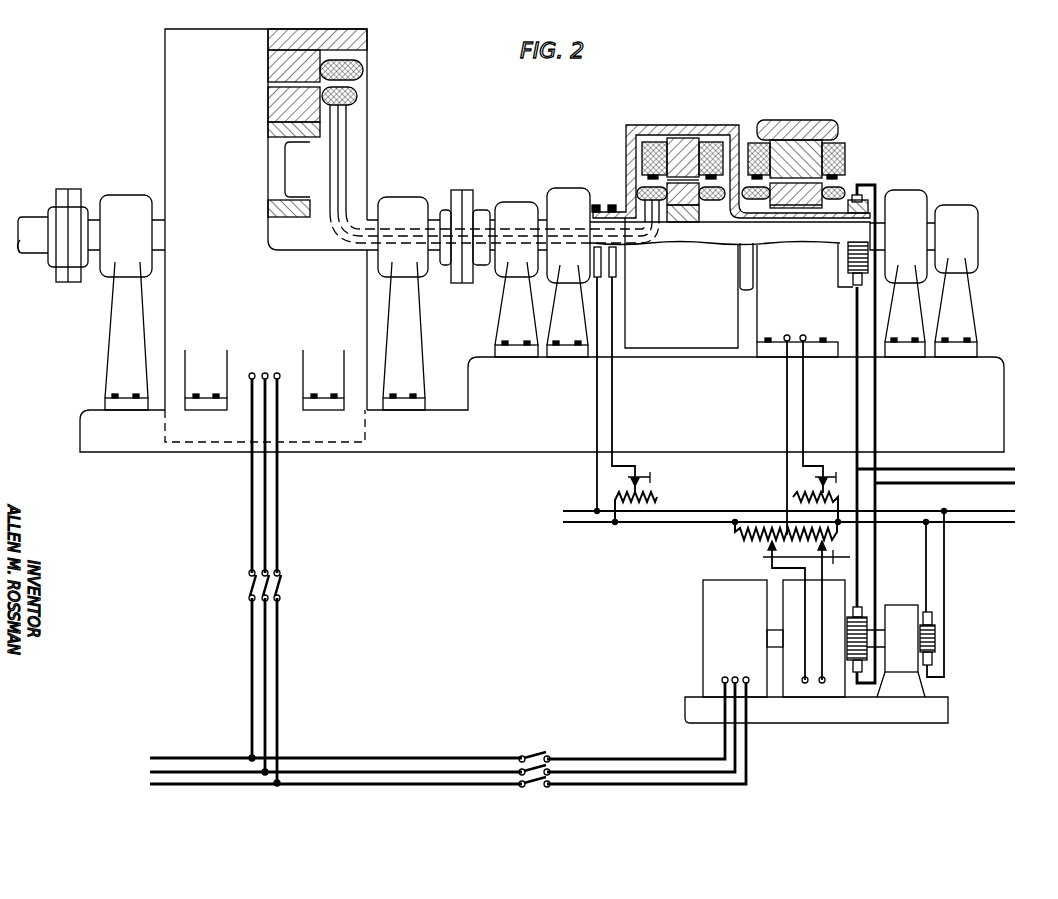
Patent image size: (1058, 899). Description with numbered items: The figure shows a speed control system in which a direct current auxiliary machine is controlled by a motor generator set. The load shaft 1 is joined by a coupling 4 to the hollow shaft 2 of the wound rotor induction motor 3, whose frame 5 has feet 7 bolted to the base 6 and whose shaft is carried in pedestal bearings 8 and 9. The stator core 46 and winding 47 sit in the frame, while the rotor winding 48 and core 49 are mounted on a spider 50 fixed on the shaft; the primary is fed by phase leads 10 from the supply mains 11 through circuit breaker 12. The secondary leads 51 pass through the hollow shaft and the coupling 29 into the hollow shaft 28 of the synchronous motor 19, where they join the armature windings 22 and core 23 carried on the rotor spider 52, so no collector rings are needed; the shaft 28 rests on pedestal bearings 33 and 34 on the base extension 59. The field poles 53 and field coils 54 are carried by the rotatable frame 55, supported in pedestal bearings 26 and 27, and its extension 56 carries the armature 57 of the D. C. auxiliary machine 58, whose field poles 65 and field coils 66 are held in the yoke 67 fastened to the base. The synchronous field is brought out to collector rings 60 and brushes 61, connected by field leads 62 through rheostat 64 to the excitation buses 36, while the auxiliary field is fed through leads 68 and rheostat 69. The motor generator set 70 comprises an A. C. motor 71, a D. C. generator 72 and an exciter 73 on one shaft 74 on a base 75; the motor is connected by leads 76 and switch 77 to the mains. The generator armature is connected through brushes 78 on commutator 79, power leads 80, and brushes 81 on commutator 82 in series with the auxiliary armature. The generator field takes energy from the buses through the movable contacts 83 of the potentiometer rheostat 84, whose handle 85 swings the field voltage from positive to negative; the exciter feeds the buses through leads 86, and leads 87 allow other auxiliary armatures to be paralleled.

The shaft 1 is at (35, 222).
The shaft 2 is at (96, 252).
The wound rotor induction motor 3 is at (126, 92).
The coupling 4 is at (60, 192).
The frame 5 is at (176, 60).
The base 6 is at (90, 428).
The feet 7 is at (322, 393).
The pedestal bearing 8 is at (118, 205).
The pedestal bearing 9 is at (413, 205).
The phase leads 10 is at (277, 492).
The alternating current supply mains 11 is at (180, 783).
The circuit breaker 12 is at (246, 586).
The synchronous motor 19 is at (718, 222).
The armature windings 22 is at (640, 195).
The core 23 is at (666, 183).
The pedestal bearing 26 is at (560, 192).
The bearing 27 is at (915, 196).
The hollow shaft 28 is at (492, 235).
The coupling 29 is at (458, 192).
The pedestal bearing 33 is at (515, 200).
The pedestal bearing 34 is at (957, 214).
The D. C. excitation buses 36 is at (698, 522).
The stator core 46 is at (320, 62).
The stator winding 47 is at (345, 70).
The rotor winding 48 is at (350, 97).
The rotor core 49 is at (312, 115).
The spider 50 is at (322, 134).
The leads 51 is at (346, 159).
The rotor spider 52 is at (683, 226).
The field poles 53 is at (683, 140).
The field coils 54 is at (645, 158).
The rotatable frame 55 is at (628, 131).
The frame extension 56 is at (795, 215).
The armature 57 is at (838, 190).
The D. C. auxiliary machine 58 is at (826, 376).
The base extension 59 is at (985, 405).
The collector rings 60 is at (613, 204).
The brushes 61 is at (613, 282).
The field leads 62 is at (615, 404).
The adjustable rheostat 64 is at (655, 492).
The field poles 65 is at (790, 130).
The field coils 66 is at (832, 160).
The yoke 67 is at (826, 135).
The leads 68 is at (788, 402).
The adjustable rheostat 69 is at (790, 490).
The regulating motor generator set 70 is at (799, 642).
The constant speed A. C. motor 71 is at (712, 605).
The direct current generator 72 is at (790, 592).
The direct current exciter 73 is at (910, 612).
The shaft 74 is at (775, 642).
The base 75 is at (935, 712).
The leads 76 is at (615, 783).
The switch 77 is at (520, 754).
The brushes 78 is at (853, 610).
The commutator 79 is at (848, 630).
The D. C. power leads 80 is at (870, 403).
The brushes 81 is at (862, 198).
The commutator 82 is at (868, 250).
The movable contacts 83 is at (818, 544).
The potentiometer type rheostat 84 is at (735, 535).
The handle 85 is at (852, 557).
The leads 86 is at (945, 556).
The leads 87 is at (988, 485).